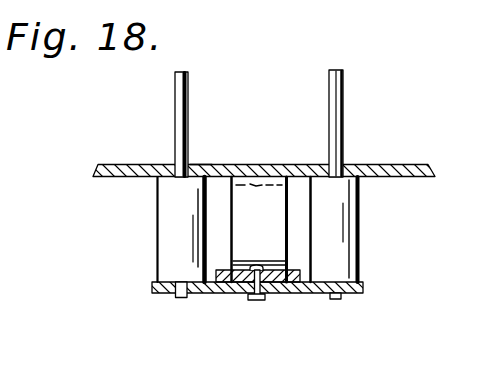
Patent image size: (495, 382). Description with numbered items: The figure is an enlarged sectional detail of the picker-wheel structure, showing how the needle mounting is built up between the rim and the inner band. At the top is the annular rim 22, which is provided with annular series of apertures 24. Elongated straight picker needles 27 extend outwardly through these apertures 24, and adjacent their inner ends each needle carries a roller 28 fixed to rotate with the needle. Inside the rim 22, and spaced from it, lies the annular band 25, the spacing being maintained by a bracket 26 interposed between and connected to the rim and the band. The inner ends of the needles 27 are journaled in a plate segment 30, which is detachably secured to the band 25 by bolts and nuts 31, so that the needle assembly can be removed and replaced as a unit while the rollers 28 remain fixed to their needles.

The annular rim 22 is at (115, 164).
The apertures 24 is at (199, 164).
The annular band 25 is at (286, 292).
The bracket 26 is at (259, 229).
The picker needle 27 is at (332, 75).
The roller 28 is at (168, 226).
The plate segment 30 is at (215, 294).
The bolts and nuts 31 is at (257, 302).